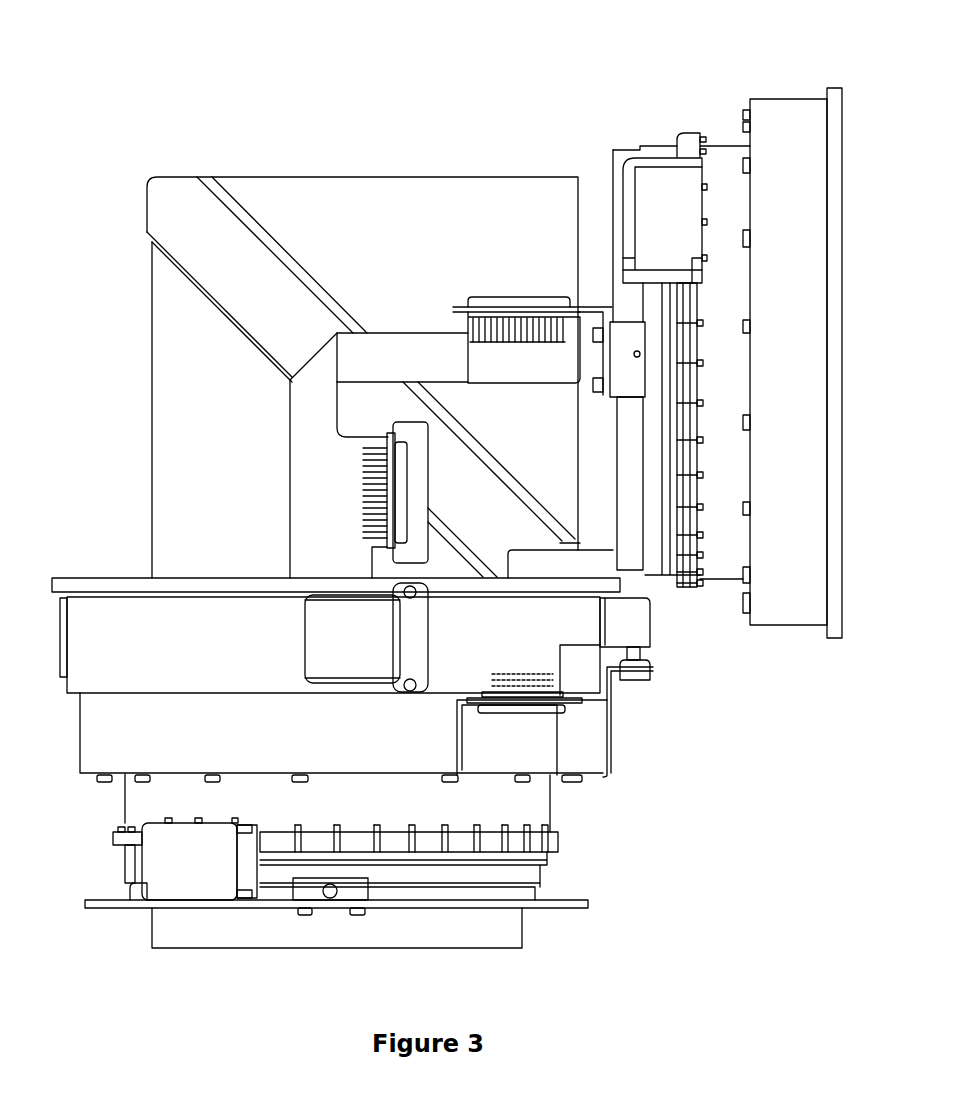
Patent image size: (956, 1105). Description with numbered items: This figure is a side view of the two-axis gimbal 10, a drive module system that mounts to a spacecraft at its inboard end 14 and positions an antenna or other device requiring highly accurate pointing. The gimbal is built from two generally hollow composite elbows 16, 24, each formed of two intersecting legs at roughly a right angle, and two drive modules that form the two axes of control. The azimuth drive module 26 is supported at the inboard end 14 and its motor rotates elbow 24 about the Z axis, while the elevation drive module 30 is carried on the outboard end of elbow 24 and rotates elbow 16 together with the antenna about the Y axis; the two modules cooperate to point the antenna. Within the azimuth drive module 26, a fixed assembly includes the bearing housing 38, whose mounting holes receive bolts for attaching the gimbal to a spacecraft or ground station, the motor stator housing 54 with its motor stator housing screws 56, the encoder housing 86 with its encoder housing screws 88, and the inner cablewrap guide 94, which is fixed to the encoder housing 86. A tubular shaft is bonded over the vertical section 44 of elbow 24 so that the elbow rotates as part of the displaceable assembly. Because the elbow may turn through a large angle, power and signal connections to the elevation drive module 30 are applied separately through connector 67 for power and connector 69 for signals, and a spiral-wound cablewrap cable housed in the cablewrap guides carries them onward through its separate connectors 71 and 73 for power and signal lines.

The two-axis gimbal 10 is at (122, 97).
The elevation drive module 30 is at (650, 70).
The connector 73 is at (488, 302).
The elbow 16 is at (470, 177).
The elbow 24 is at (170, 430).
The vertical section 44 is at (152, 478).
The connector 71 is at (412, 465).
The inner cablewrap guide 94 is at (87, 620).
The encoder housing 86 is at (95, 717).
The encoder housing screws 88 is at (93, 778).
The motor stator housing 54 is at (132, 787).
The motor stator housing screws 56 is at (117, 825).
The connector 67 is at (633, 675).
The azimuth drive module 26 is at (637, 730).
The connector 69 is at (548, 710).
The bearing housing 38 is at (577, 903).
The inboard end 14 is at (520, 927).